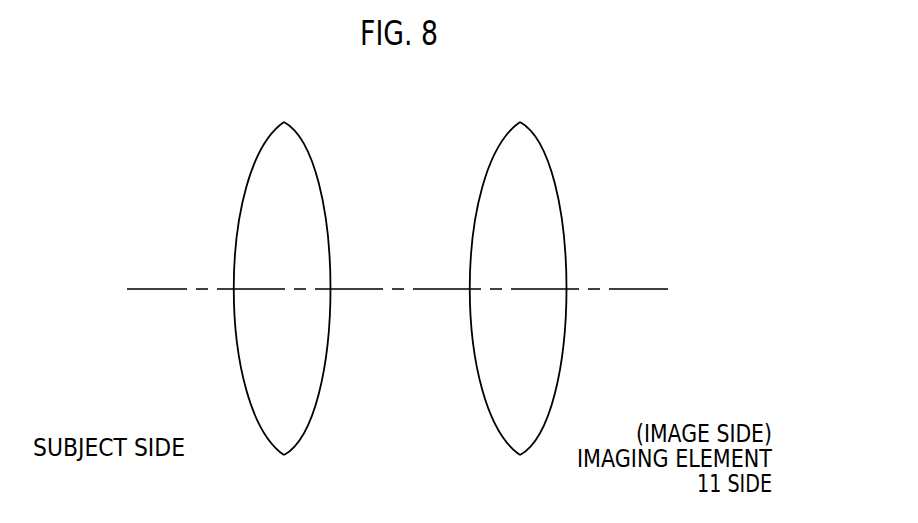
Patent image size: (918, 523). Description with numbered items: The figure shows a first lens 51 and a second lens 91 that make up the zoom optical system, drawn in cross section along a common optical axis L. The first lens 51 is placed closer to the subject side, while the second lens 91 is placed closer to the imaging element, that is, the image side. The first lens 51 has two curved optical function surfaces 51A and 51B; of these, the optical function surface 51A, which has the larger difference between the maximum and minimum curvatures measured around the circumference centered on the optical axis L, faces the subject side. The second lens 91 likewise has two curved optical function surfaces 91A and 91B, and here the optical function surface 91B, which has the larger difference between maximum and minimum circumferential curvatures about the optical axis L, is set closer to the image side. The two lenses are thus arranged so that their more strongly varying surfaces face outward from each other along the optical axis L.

The first lens 51 is at (287, 256).
The optical function surface 51A is at (247, 185).
The optical function surface 51B is at (319, 185).
The second lens 91 is at (524, 256).
The optical function surface 91A is at (483, 185).
The optical function surface 91B is at (556, 185).
The optical axis L is at (155, 290).